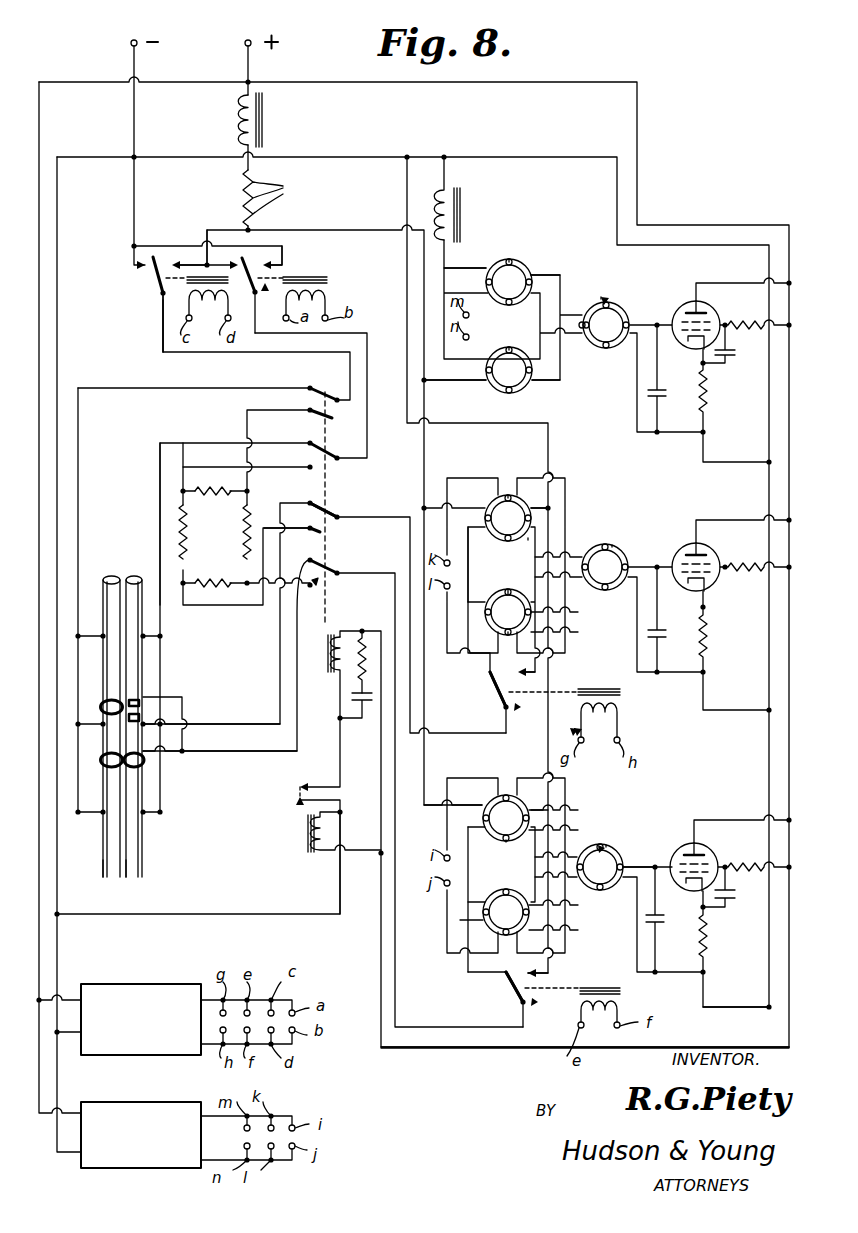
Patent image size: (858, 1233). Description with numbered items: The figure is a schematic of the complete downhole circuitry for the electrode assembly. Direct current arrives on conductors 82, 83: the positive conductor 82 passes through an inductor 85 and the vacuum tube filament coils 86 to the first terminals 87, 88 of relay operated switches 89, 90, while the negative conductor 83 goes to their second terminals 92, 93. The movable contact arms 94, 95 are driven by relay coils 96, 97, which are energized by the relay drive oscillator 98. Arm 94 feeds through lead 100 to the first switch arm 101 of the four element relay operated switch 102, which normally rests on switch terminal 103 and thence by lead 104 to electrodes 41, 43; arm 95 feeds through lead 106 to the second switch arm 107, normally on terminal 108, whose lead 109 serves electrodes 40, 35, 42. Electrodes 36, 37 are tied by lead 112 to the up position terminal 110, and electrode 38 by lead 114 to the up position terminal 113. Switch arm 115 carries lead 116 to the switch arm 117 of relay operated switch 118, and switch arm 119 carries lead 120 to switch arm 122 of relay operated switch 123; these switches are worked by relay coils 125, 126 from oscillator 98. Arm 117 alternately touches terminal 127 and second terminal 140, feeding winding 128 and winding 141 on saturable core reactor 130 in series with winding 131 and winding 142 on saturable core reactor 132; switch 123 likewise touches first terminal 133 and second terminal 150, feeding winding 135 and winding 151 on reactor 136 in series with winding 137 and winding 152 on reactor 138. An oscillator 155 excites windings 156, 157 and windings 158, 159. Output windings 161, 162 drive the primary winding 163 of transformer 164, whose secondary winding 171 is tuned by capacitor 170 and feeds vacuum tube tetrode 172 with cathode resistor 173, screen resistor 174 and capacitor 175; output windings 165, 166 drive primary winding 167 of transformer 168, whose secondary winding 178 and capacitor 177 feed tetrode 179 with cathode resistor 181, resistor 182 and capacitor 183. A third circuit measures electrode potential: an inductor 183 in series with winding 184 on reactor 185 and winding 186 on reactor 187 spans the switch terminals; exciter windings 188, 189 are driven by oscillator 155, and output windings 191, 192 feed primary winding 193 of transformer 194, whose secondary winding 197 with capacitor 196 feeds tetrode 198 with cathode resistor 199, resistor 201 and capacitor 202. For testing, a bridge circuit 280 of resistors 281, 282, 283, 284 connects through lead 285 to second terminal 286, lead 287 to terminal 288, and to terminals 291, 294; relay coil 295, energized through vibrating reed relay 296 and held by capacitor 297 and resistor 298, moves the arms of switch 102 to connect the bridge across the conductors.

The conductor 83 is at (130, 44).
The conductor 82 is at (248, 50).
The inductor 85 is at (238, 118).
The vacuum tube filament coils 86 is at (274, 198).
The first terminal 87 is at (236, 260).
The first terminal 88 is at (174, 262).
The relay operated switch 89 is at (262, 295).
The relay operated switch 90 is at (143, 290).
The second terminal 92 is at (284, 256).
The second terminal 93 is at (150, 272).
The movable contact arm 94 is at (290, 277).
The movable contact arm 95 is at (163, 305).
The relay coil 96 is at (330, 302).
The relay coil 97 is at (205, 306).
The relay drive oscillator 98 is at (146, 984).
The lead 100 is at (367, 343).
The first switch arm 101 is at (330, 452).
The four element relay operated switch 102 is at (326, 582).
The switch terminal 103 is at (308, 442).
The lead 104 is at (158, 468).
The lead 106 is at (190, 358).
The second switch arm 107 is at (336, 374).
The terminal 108 is at (310, 388).
The lead 109 is at (78, 416).
The up position terminal 110 is at (326, 564).
The lead 112 is at (226, 752).
The up position terminal 113 is at (326, 494).
The lead 114 is at (220, 724).
The switch arm 115 is at (342, 572).
The lead 116 is at (398, 968).
The switch arm 117 is at (512, 992).
The relay operated switch 118 is at (532, 1002).
The switch arm 119 is at (334, 508).
The lead 120 is at (378, 518).
The switch arm 122 is at (499, 702).
The relay operated switch 123 is at (515, 706).
The relay coil 125 is at (602, 1022).
The relay coil 126 is at (614, 720).
The terminal 127 is at (496, 980).
The winding 128 is at (482, 920).
The saturable core reactor 130 is at (569, 931).
The winding 131 is at (486, 814).
The saturable core reactor 132 is at (569, 826).
The first terminal 133 is at (488, 678).
The winding 135 is at (485, 612).
The saturable core reactor 136 is at (570, 633).
The winding 137 is at (488, 506).
The saturable core reactor 138 is at (528, 535).
The second terminal 140 is at (534, 974).
The winding 141 is at (569, 903).
The winding 142 is at (569, 803).
The second terminal 150 is at (530, 676).
The winding 151 is at (570, 610).
The winding 152 is at (530, 520).
The oscillator 155 is at (136, 1102).
The winding 156 is at (506, 912).
The winding 157 is at (506, 796).
The winding 158 is at (508, 636).
The winding 159 is at (508, 496).
The output winding 161 is at (502, 876).
The output winding 162 is at (506, 842).
The primary winding 163 is at (619, 908).
The transformer 164 is at (604, 844).
The output winding 165 is at (510, 592).
The output winding 166 is at (509, 542).
The primary winding 167 is at (568, 556).
The transformer 168 is at (614, 544).
The capacitor 170 is at (655, 932).
The secondary winding 171 is at (641, 869).
The vacuum tube tetrode 172 is at (686, 840).
The cathode resistor 173 is at (702, 940).
The resistor 174 is at (746, 856).
The capacitor 175 is at (738, 902).
The capacitor 177 is at (659, 642).
The secondary winding 178 is at (640, 548).
The vacuum tube tetrode 179 is at (706, 552).
The cathode resistor 181 is at (704, 654).
The resistor 182 is at (742, 576).
The capacitor 183 is at (466, 192).
The winding 184 is at (489, 266).
The saturable core reactor 185 is at (526, 242).
The winding 186 is at (480, 384).
The saturable core reactor 187 is at (512, 392).
The exciter winding 188 is at (504, 350).
The exciter winding 189 is at (519, 281).
The output winding 191 is at (536, 376).
The output winding 192 is at (540, 284).
The primary winding 193 is at (580, 326).
The transformer 194 is at (604, 295).
The capacitor 196 is at (659, 396).
The secondary winding 197 is at (642, 306).
The vacuum tube tetrode 198 is at (696, 284).
The cathode resistor 199 is at (707, 411).
The resistor 201 is at (748, 318).
The capacitor 202 is at (738, 360).
The bridge circuit 280 is at (234, 540).
The resistor 281 is at (217, 487).
The resistor 282 is at (180, 524).
The resistor 283 is at (226, 568).
The resistor 284 is at (252, 518).
The lead 285 is at (251, 411).
The second terminal 286 is at (336, 417).
The lead 287 is at (189, 443).
The terminal 288 is at (310, 466).
The terminal 291 is at (322, 531).
The terminal 294 is at (296, 562).
The relay coil 295 is at (338, 682).
The vibrating reed relay 296 is at (307, 866).
The capacitor 297 is at (370, 706).
The resistor 298 is at (362, 632).
The electrode 35 is at (103, 710).
The electrode 36 is at (142, 762).
The electrode 37 is at (140, 698).
The electrode 38 is at (142, 713).
The electrode 40 is at (112, 578).
The electrode 41 is at (137, 576).
The electrode 42 is at (103, 873).
The electrode 43 is at (143, 862).